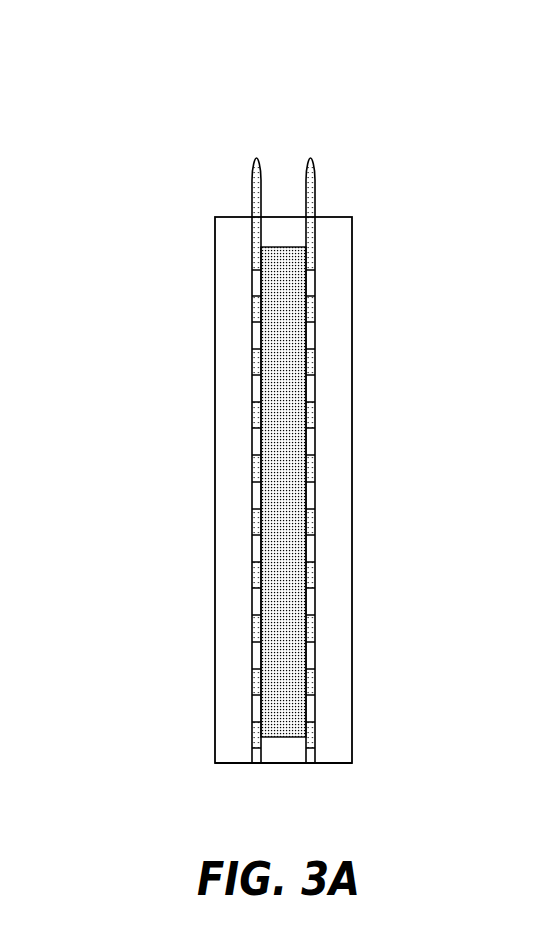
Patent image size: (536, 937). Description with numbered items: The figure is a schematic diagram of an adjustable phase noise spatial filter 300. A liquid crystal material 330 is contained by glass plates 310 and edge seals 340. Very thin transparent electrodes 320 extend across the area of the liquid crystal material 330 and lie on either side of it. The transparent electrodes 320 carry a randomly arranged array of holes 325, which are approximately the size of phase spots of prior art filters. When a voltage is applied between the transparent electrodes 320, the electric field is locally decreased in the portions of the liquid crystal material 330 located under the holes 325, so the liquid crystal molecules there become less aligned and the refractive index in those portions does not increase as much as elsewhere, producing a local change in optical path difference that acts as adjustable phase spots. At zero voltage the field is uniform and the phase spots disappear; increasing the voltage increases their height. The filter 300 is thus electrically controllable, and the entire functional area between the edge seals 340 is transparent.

The adjustable phase noise spatial filter 300 is at (303, 56).
The glass plates 310 is at (215, 318).
The transparent electrodes 320 is at (315, 154).
The holes 325 is at (254, 463).
The liquid crystal material 330 is at (282, 610).
The edge seals 340 is at (280, 764).